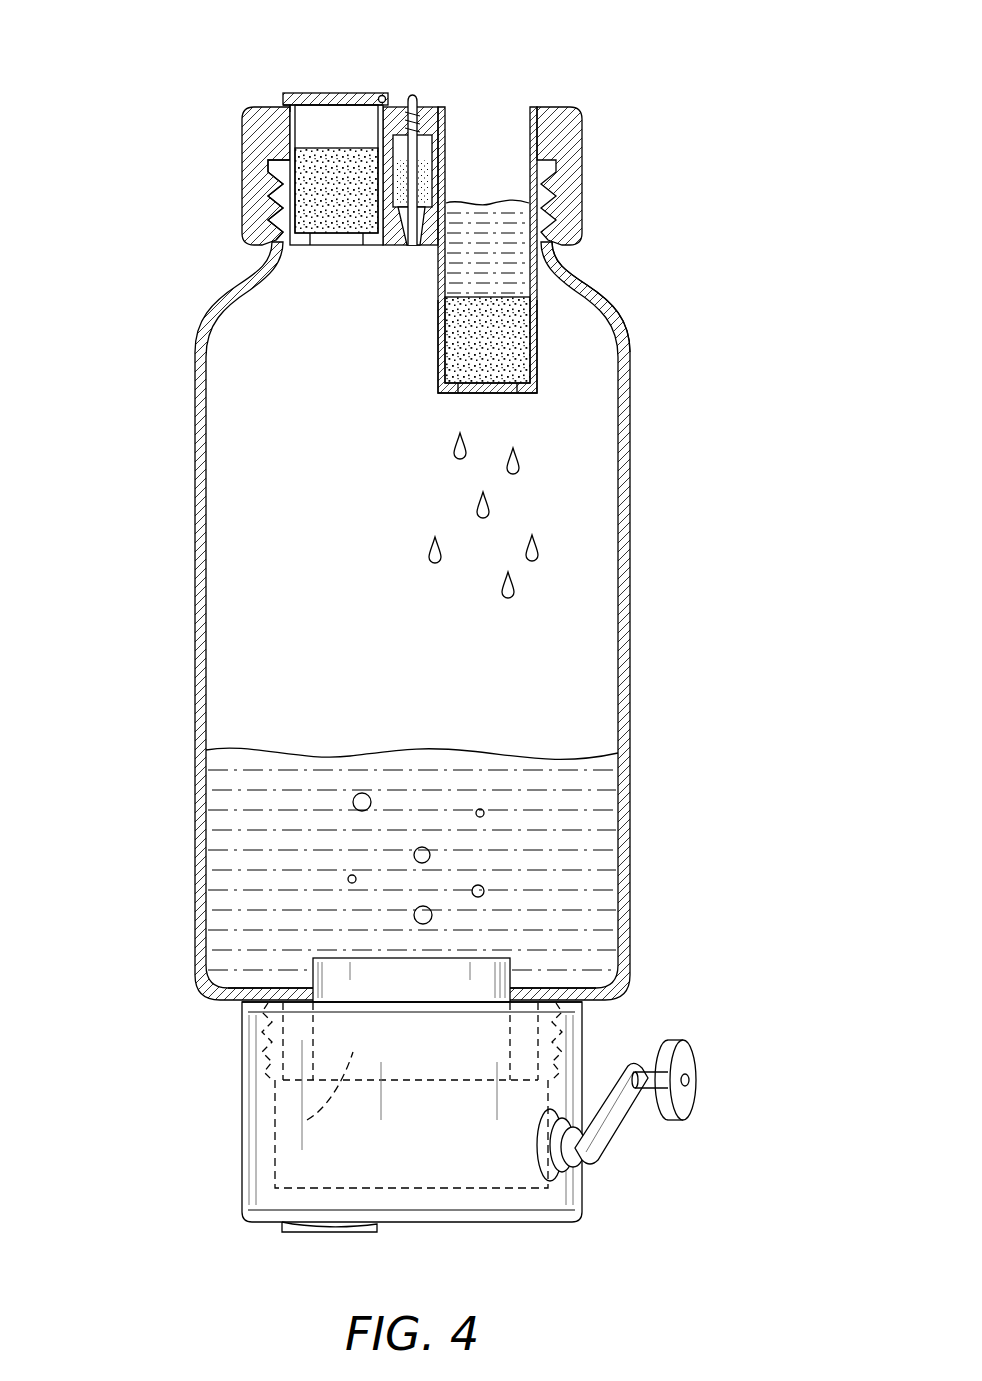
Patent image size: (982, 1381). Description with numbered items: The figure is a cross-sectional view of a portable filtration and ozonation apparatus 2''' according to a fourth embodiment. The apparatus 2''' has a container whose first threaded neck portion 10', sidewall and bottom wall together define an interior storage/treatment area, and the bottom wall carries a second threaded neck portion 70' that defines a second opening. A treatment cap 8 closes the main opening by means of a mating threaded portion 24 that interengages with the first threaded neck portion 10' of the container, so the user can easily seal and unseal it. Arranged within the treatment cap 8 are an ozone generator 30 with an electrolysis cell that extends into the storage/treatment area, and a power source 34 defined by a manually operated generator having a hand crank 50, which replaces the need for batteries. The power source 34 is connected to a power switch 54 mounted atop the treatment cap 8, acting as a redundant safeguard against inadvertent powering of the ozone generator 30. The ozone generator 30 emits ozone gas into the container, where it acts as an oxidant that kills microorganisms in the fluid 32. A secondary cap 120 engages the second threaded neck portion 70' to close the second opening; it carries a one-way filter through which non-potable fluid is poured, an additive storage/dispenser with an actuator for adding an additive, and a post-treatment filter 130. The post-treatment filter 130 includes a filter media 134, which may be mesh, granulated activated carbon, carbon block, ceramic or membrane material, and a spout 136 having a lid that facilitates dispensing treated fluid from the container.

The ozonation apparatus 2''' is at (453, 656).
The treatment cap 8 is at (476, 1153).
The first threaded neck portion 10' is at (466, 1041).
The mating threaded portion 24 is at (297, 1090).
The ozone generator 30 is at (313, 1117).
The fluid 32 is at (558, 847).
The power source 34 is at (453, 1170).
The hand crank 50 is at (683, 1100).
The power switch 54 is at (293, 1232).
The second threaded neck portion 70' is at (213, 200).
The secondary cap 120 is at (426, 183).
The post-treatment filter 130 is at (332, 182).
The filter media 134 is at (350, 213).
The spout 136 is at (340, 93).